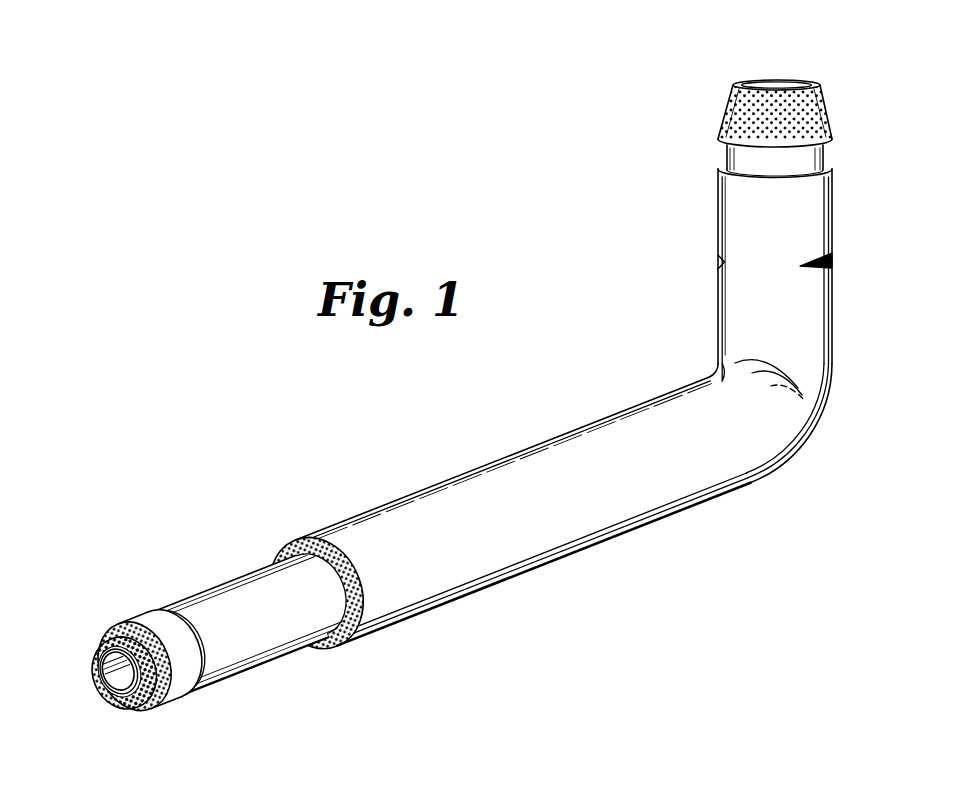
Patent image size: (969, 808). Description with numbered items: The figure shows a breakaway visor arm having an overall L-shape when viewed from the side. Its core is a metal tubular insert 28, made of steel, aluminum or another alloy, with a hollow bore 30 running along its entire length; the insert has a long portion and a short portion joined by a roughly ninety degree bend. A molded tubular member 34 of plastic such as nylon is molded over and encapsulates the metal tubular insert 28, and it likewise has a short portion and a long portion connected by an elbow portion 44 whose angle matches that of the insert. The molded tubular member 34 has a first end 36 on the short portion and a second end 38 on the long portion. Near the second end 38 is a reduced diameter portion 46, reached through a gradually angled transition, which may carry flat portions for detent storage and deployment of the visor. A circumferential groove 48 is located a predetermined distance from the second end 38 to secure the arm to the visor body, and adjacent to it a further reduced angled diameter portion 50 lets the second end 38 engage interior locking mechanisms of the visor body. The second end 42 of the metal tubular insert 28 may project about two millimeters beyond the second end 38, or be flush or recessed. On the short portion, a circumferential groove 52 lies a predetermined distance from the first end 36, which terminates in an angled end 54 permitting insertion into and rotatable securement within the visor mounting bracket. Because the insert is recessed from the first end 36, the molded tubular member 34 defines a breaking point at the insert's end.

The metal tubular insert 28 is at (110, 697).
The hollow bore 30 is at (105, 670).
The molded tubular member 34 is at (572, 416).
The first end 36 is at (795, 81).
The second end 38 is at (138, 638).
The second end 42 is at (167, 700).
The elbow portion 44 is at (825, 402).
The reduced diameter portion 46 is at (227, 603).
The circumferential groove 48 is at (202, 657).
The further reduced angled diameter portion 50 is at (117, 628).
The circumferential groove 52 is at (727, 158).
The angled end 54 is at (782, 87).